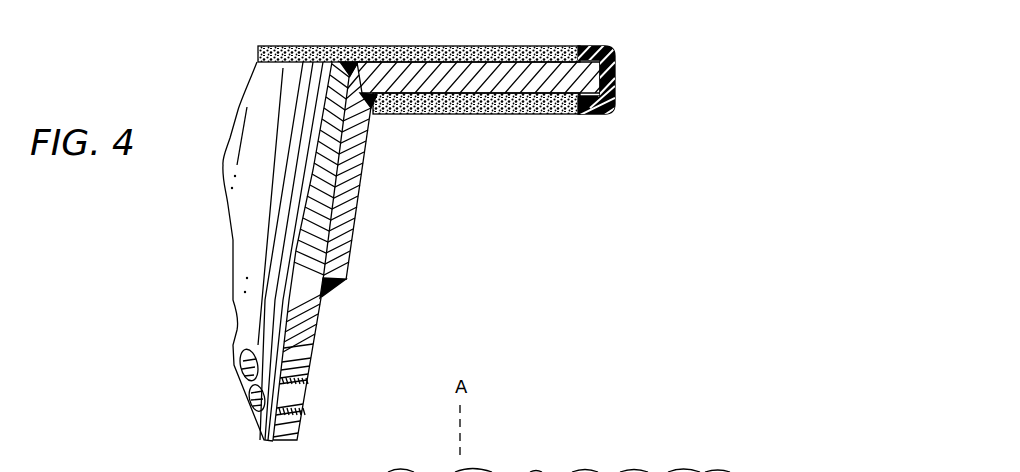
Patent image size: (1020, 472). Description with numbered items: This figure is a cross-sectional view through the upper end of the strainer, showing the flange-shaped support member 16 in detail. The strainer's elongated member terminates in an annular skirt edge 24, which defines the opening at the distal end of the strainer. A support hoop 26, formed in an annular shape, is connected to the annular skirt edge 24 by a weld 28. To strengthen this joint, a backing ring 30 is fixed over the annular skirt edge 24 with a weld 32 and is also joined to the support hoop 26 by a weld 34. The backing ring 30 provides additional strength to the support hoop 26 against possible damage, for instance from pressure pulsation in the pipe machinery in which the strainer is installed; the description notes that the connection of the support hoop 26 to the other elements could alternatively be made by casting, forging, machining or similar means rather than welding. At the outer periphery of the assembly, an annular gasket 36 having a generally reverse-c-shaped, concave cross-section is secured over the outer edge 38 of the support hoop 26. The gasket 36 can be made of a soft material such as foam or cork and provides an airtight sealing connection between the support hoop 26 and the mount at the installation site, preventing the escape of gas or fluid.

The flange-shaped support member 16 is at (506, 30).
The annular skirt edge 24 is at (333, 97).
The support hoop 26 is at (560, 53).
The weld 28 is at (354, 63).
The backing ring 30 is at (360, 192).
The weld 32 is at (346, 292).
The weld 34 is at (380, 108).
The annular gasket 36 is at (617, 77).
The outer edge 38 is at (577, 93).